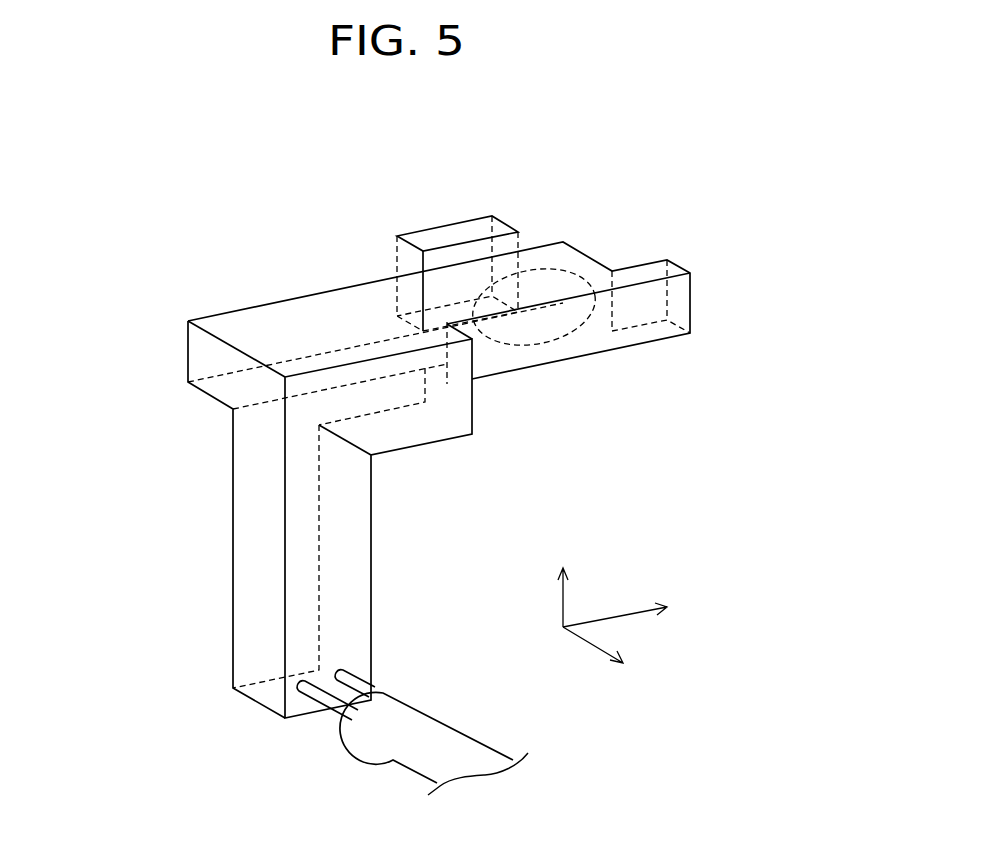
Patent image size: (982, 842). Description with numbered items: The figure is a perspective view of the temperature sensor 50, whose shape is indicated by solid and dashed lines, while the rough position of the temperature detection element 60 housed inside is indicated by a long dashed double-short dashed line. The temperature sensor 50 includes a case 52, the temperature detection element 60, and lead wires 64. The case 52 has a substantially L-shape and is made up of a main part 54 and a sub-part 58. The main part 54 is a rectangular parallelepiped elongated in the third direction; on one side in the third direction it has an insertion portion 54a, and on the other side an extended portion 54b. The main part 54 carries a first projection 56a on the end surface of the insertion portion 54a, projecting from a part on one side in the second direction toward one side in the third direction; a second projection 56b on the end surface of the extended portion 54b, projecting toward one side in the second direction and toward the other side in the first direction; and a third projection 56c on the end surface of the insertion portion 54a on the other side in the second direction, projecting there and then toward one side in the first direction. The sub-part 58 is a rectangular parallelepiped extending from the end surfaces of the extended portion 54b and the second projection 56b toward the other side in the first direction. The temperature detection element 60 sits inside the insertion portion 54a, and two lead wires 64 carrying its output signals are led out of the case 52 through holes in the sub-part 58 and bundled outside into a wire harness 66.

The temperature sensor 50 is at (140, 206).
The case 52 is at (221, 318).
The main part 54 is at (337, 225).
The insertion portion 54a is at (543, 258).
The extended portion 54b is at (328, 313).
The first projection 56a is at (652, 266).
The second projection 56b is at (400, 341).
The third projection 56c is at (458, 231).
The sub-part 58 is at (214, 563).
The temperature detection element 60 is at (568, 345).
The lead wires 64 is at (372, 692).
The wire harness 66 is at (424, 761).